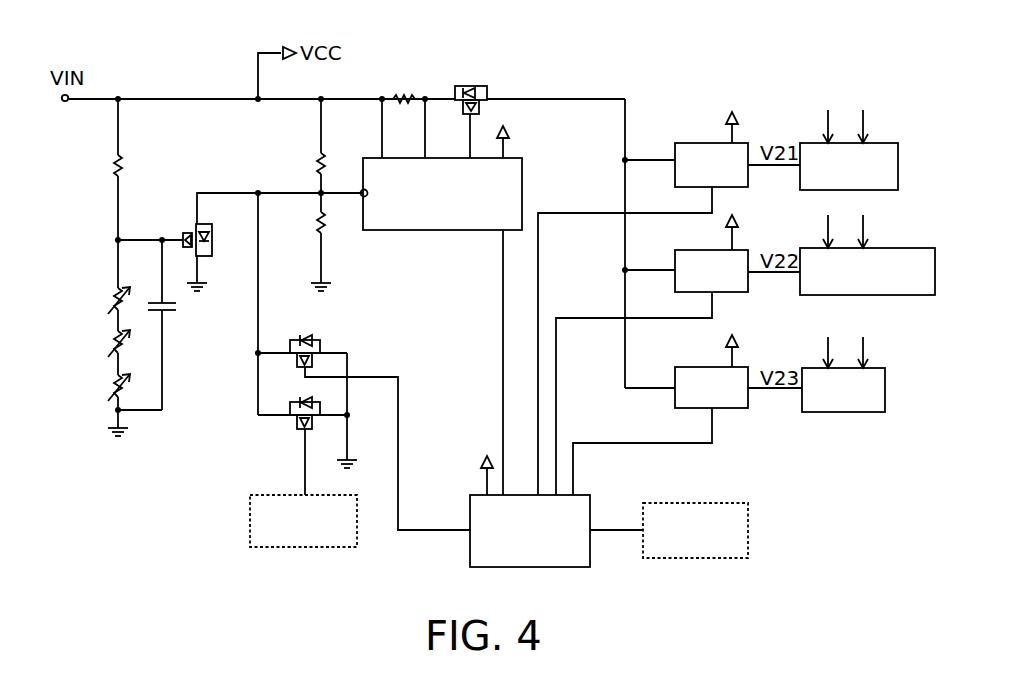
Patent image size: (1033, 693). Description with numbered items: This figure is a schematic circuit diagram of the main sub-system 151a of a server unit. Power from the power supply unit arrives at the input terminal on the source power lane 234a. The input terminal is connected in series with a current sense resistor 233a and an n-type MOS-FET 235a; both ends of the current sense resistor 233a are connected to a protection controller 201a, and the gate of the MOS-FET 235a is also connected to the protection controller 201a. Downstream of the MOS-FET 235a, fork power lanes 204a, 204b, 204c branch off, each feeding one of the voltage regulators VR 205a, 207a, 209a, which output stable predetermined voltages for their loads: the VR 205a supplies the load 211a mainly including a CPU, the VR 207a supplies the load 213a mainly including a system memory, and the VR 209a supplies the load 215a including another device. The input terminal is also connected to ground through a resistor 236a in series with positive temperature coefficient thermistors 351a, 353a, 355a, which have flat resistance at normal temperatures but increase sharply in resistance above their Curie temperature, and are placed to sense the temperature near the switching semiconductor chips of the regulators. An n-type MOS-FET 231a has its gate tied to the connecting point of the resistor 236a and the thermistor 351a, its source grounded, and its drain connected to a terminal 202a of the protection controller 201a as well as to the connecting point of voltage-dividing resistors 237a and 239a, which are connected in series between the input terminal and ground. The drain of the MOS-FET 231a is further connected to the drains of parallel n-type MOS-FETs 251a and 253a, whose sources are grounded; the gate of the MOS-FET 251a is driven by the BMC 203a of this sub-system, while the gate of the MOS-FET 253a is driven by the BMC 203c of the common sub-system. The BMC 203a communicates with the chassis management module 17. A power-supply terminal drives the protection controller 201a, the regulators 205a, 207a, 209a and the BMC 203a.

The main sub-system 151a is at (187, 42).
The source power lane 234a is at (184, 97).
The n-type MOS-FET 235a is at (118, 158).
The voltage-dividing resistor 237a is at (345, 148).
The voltage-dividing resistor 239a is at (324, 228).
The current sense resistor 233a is at (402, 97).
The resistor 236a is at (475, 86).
The protection controller 201a is at (521, 158).
The terminal 202a is at (365, 197).
The n-type MOS-FET 231a is at (222, 221).
The PTC thermistor 351a is at (116, 297).
The PTC thermistor 353a is at (116, 348).
The PTC thermistor 355a is at (116, 392).
The n-type MOS-FET 251a is at (298, 338).
The n-type MOS-FET 253a is at (295, 400).
The BMC 203c is at (357, 548).
The BMC 203a is at (590, 495).
The chassis management module 17 is at (748, 503).
The fork power lane 204a is at (640, 160).
The fork power lane 204b is at (640, 270).
The fork power lane 204c is at (640, 388).
The VR 205a is at (748, 143).
The VR 207a is at (748, 250).
The VR 209a is at (748, 367).
The load 211a is at (888, 143).
The load 213a is at (888, 248).
The load 215a is at (886, 368).